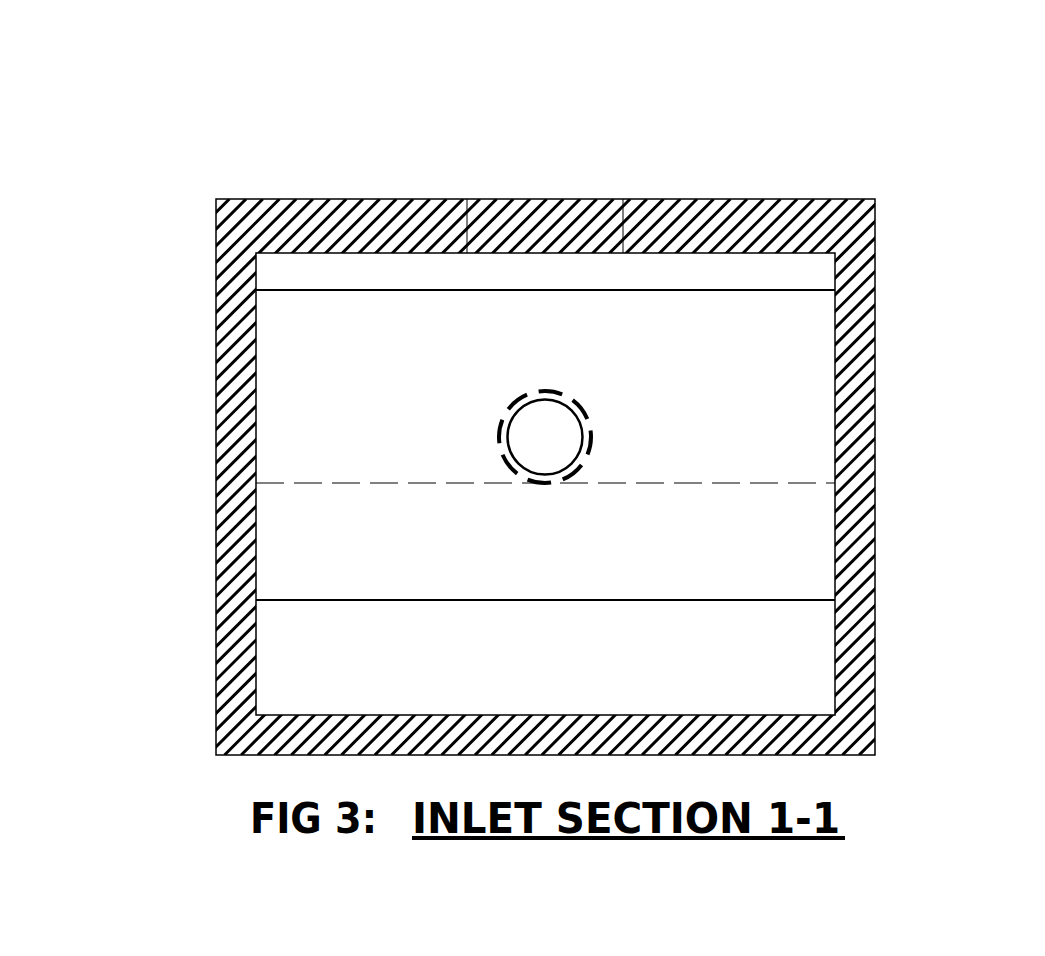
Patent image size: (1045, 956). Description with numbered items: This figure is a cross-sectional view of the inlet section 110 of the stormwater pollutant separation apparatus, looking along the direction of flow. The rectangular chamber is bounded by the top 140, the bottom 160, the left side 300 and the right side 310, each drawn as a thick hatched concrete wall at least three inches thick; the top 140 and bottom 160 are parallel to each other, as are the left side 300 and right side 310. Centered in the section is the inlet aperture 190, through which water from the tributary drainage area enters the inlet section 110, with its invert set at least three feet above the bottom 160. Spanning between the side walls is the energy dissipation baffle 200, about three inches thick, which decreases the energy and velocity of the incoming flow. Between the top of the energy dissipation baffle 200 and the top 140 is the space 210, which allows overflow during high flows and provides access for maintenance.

The inlet section 110 is at (835, 90).
The top 140 is at (676, 199).
The bottom 160 is at (727, 750).
The inlet aperture 190 is at (545, 485).
The energy dissipation baffle 200 is at (295, 508).
The space 210 is at (287, 270).
The left side 300 is at (216, 390).
The right side 310 is at (875, 396).